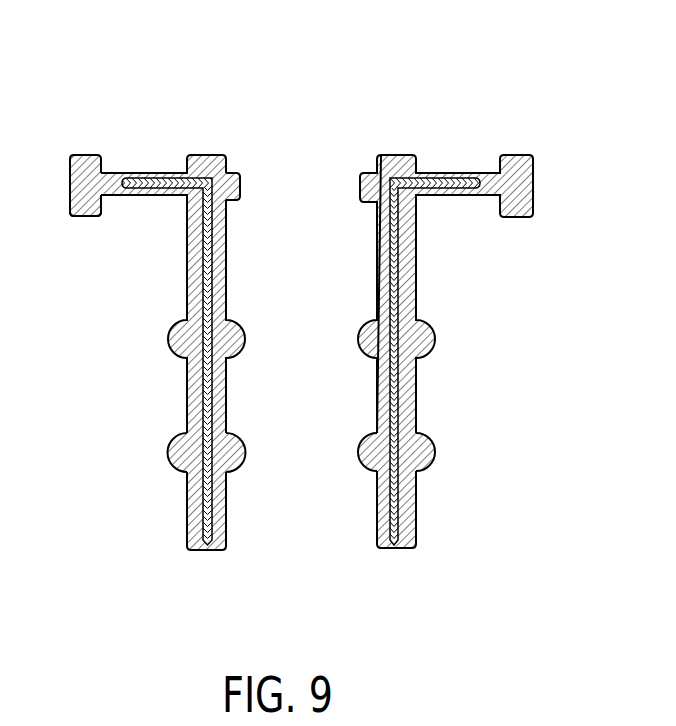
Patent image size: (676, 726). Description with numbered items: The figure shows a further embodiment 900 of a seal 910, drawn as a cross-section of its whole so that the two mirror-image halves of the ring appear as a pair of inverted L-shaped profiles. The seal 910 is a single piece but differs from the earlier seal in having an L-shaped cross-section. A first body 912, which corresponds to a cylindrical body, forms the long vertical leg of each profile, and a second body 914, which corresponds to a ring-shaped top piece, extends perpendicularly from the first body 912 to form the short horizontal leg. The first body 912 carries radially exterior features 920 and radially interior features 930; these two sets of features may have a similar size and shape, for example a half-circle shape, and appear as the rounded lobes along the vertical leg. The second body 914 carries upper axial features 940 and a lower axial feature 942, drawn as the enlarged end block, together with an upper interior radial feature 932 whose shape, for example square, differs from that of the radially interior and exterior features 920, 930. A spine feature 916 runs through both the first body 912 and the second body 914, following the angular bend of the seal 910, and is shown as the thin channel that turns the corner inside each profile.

The further embodiment 900 is at (565, 43).
The seal 910 is at (565, 128).
The first body 912 is at (400, 548).
The second body 914 is at (445, 173).
The spine feature 916 is at (202, 272).
The radially exterior features 920 is at (168, 457).
The radially interior features 930 is at (360, 465).
The upper interior radial feature 932 is at (235, 173).
The upper axial features 940 is at (88, 155).
The lower axial feature 942 is at (86, 216).